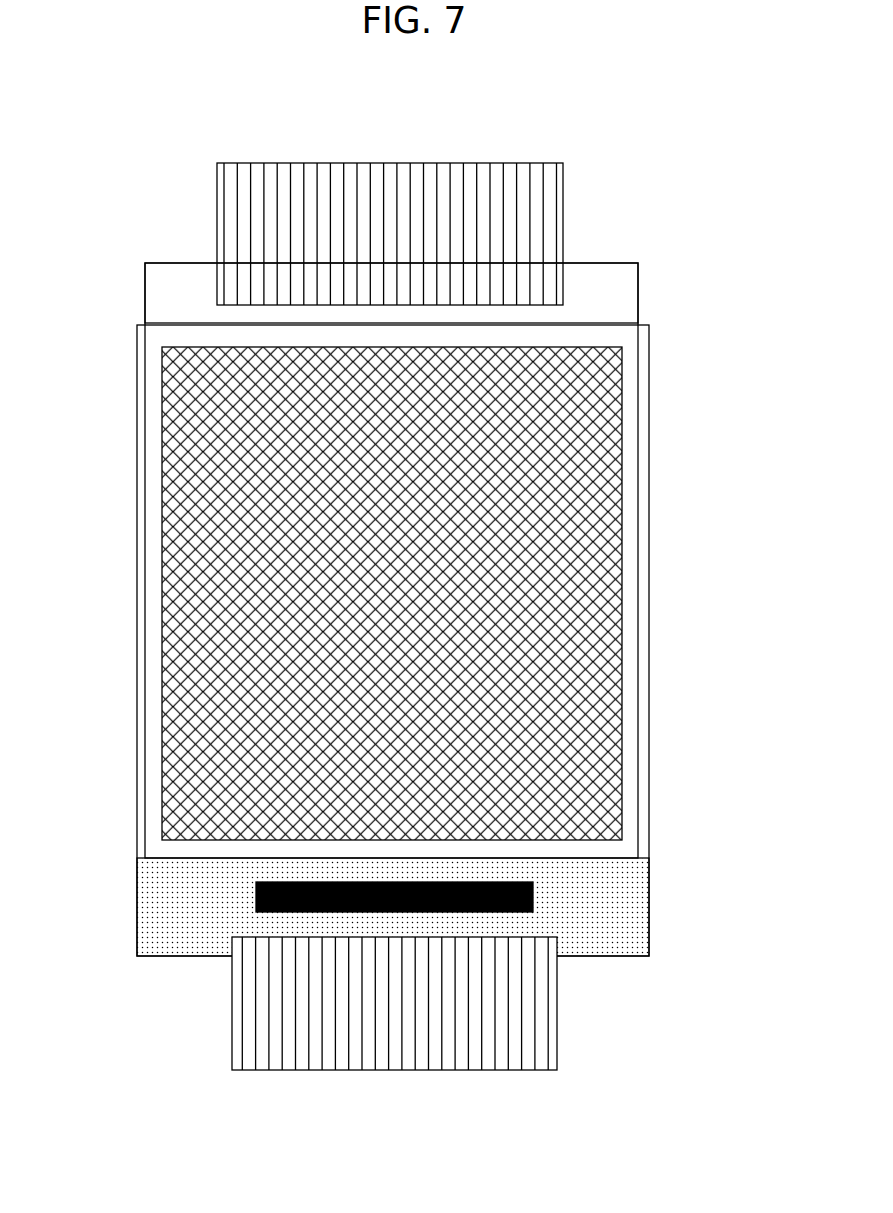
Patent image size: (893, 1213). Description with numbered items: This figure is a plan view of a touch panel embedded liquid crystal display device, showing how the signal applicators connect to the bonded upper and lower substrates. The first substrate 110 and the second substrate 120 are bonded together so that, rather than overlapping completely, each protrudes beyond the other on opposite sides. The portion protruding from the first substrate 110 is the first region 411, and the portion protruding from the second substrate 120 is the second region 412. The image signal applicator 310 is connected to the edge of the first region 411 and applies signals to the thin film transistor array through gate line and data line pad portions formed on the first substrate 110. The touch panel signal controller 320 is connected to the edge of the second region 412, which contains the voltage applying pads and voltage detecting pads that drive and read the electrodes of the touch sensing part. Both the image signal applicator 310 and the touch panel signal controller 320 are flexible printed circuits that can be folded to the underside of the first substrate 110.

The first substrate 110 is at (642, 903).
The second substrate 120 is at (155, 293).
The image signal applicator 310 is at (545, 1035).
The touch panel signal controller 320 is at (498, 172).
The first region 411 is at (135, 860).
The second region 412 is at (640, 263).